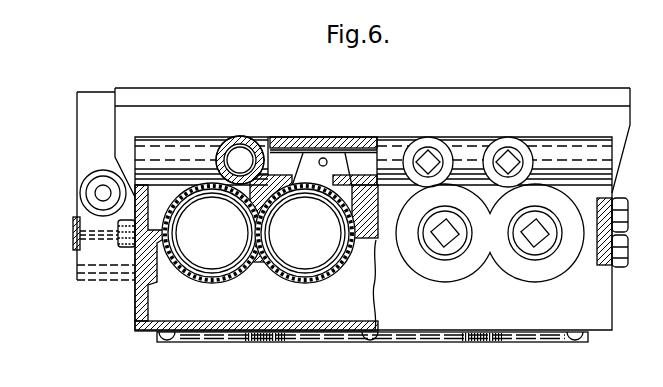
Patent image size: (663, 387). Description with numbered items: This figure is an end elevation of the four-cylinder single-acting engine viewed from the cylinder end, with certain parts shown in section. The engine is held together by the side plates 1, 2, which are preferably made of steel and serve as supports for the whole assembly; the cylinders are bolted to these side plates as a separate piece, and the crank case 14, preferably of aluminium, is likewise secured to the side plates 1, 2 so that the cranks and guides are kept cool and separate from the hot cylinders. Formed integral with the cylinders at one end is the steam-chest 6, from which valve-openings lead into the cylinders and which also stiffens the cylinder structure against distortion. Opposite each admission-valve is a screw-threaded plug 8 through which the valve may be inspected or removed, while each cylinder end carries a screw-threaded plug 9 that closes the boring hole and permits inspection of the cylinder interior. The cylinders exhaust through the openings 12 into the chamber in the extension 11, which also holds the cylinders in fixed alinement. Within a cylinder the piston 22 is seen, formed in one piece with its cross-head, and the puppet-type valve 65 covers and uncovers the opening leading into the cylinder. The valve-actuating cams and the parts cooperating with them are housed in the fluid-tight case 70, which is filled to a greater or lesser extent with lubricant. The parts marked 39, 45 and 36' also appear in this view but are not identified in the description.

The fluid-tight case 70 is at (500, 93).
The roller 39 is at (100, 193).
The adjusting screw 45 is at (90, 248).
The side plate 1 is at (135, 270).
The piston 22 is at (217, 257).
The exhaust openings 12 is at (298, 276).
The valve 65 is at (238, 157).
The steam-chest 6 is at (465, 147).
The screw-threaded plug 8 is at (505, 157).
The screw-threaded plug 9 is at (532, 238).
The side plate 2 is at (601, 263).
The extension 11 is at (248, 305).
The case 14 is at (354, 341).
The knurled section 36' is at (373, 359).